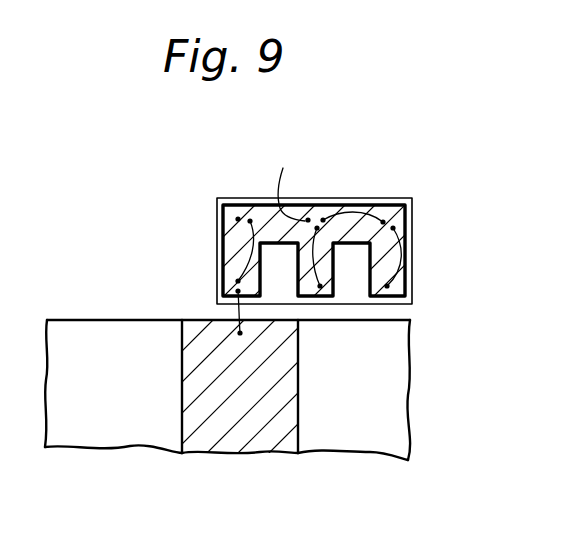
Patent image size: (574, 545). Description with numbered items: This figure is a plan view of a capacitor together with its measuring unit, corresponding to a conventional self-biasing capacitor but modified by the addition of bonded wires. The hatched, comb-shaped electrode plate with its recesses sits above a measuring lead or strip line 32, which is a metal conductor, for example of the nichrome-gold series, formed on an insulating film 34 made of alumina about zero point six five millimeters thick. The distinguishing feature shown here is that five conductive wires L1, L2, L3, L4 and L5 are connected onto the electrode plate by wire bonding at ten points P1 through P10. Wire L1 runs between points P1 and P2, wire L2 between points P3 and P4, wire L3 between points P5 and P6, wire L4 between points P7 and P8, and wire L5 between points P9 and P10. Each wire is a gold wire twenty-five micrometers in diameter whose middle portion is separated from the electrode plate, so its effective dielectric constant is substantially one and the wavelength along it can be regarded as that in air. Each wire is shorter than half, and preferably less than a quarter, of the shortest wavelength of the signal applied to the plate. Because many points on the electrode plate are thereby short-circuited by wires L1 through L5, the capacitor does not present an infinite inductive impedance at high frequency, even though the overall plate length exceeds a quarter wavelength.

The wire bonding point P1 is at (387, 286).
The wire bonding point P2 is at (393, 228).
The wire bonding point P3 is at (383, 222).
The wire bonding point P4 is at (323, 220).
The wire bonding point P5 is at (308, 220).
The wire bonding point P6 is at (320, 286).
The wire bonding point P7 is at (317, 228).
The wire bonding point P8 is at (250, 221).
The wire bonding point P9 is at (237, 219).
The wire bonding point P10 is at (237, 282).
The conductive wire L1 is at (404, 258).
The conductive wire L2 is at (362, 200).
The conductive wire L3 is at (298, 260).
The conductive wire L4 is at (288, 179).
The conductive wire L5 is at (245, 245).
The strip line 32 is at (235, 443).
The insulating film 34 is at (118, 435).